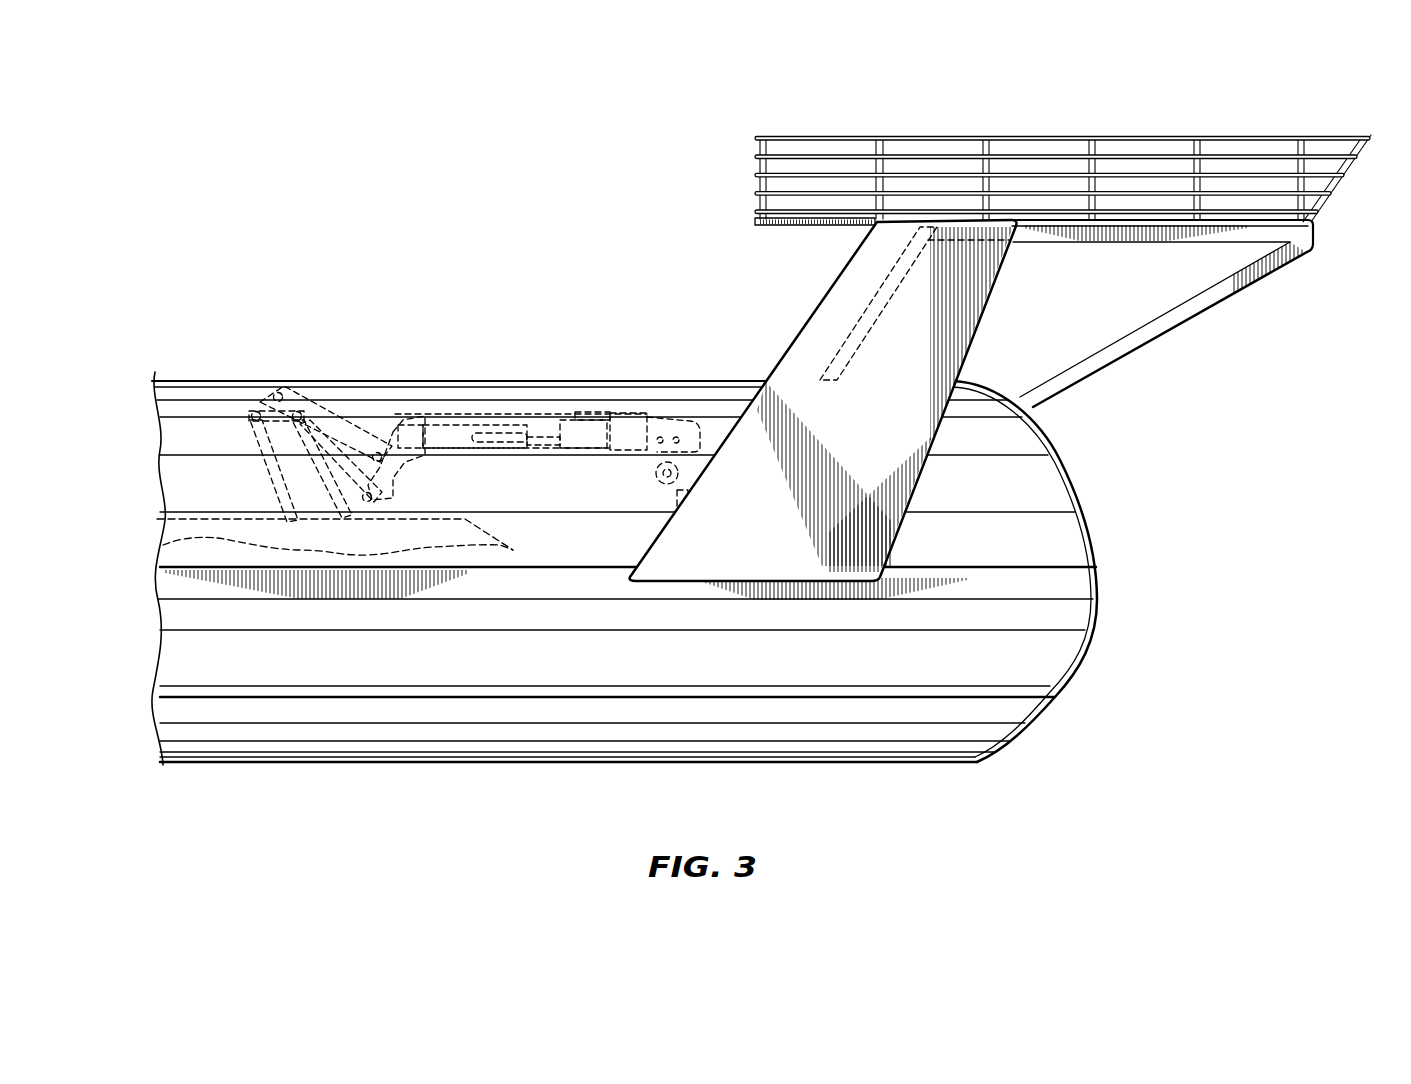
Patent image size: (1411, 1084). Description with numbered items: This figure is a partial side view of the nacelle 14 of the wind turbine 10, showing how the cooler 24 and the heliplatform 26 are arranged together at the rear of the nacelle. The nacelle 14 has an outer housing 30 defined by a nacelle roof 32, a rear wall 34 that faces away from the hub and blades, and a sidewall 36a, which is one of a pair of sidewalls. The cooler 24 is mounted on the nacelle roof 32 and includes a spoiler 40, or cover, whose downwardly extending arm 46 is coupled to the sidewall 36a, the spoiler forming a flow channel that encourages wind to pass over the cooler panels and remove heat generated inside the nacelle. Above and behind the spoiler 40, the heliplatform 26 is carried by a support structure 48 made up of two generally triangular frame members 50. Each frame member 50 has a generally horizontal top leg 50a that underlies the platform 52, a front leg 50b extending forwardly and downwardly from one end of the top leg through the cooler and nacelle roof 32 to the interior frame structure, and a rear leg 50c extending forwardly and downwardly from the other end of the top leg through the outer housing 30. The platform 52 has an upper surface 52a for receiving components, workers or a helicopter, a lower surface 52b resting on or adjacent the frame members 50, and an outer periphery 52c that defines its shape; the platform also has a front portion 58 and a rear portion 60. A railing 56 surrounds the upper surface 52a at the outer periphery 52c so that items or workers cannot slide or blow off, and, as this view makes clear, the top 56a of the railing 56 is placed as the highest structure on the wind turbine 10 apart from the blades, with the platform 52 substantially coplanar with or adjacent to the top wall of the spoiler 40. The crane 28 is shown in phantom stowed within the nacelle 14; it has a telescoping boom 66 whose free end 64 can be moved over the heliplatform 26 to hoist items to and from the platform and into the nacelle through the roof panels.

The wind turbine 10 is at (165, 357).
The nacelle 14 is at (233, 381).
The cooler 24 is at (993, 304).
The heliplatform 26 is at (993, 181).
The crane 28 is at (429, 416).
The outer housing 30 is at (168, 483).
The nacelle roof 32 is at (296, 382).
The rear wall 34 is at (1086, 637).
The sidewall 36a is at (319, 662).
The spoiler 40 is at (944, 433).
The arm 46 is at (748, 540).
The support structure 48 is at (1250, 291).
The frame member 50 is at (1139, 251).
The top leg 50a is at (1080, 241).
The front leg 50b is at (868, 303).
The rear leg 50c is at (1116, 355).
The platform 52 is at (993, 188).
The upper surface 52a is at (795, 219).
The lower surface 52b is at (813, 232).
The outer periphery 52c is at (1312, 239).
The railing 56 is at (1030, 152).
The top of the railing 56a is at (858, 137).
The front portion 58 is at (752, 217).
The rear portion 60 is at (1248, 217).
The free end 64 is at (674, 430).
The telescoping boom 66 is at (548, 414).